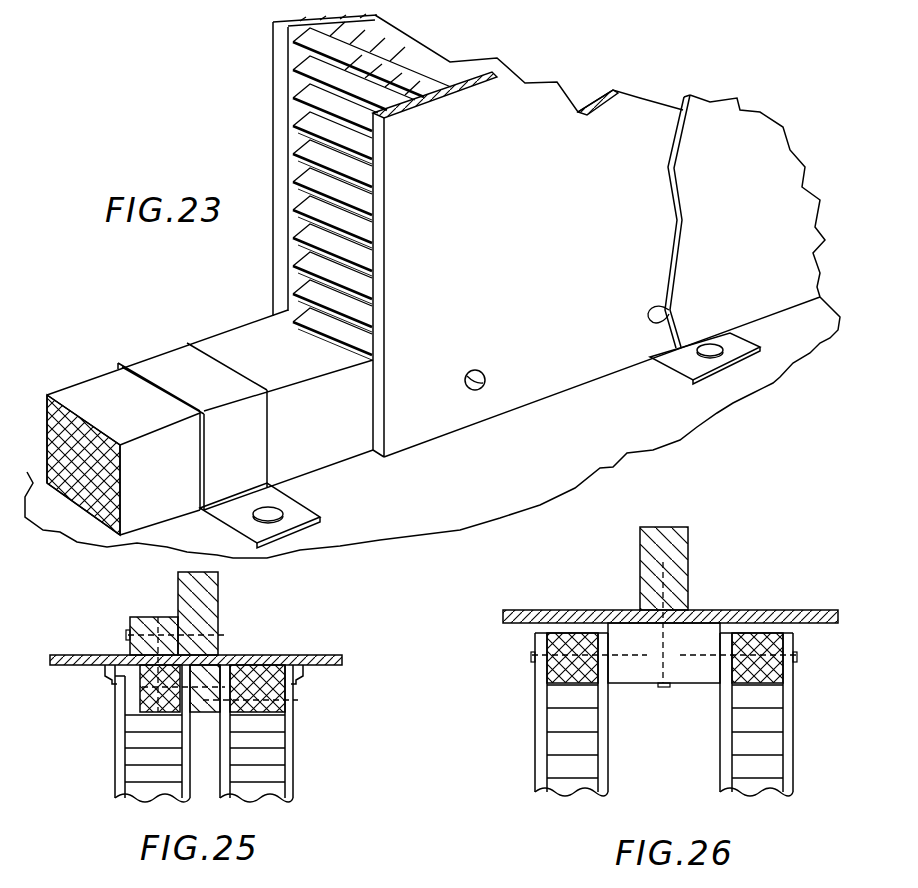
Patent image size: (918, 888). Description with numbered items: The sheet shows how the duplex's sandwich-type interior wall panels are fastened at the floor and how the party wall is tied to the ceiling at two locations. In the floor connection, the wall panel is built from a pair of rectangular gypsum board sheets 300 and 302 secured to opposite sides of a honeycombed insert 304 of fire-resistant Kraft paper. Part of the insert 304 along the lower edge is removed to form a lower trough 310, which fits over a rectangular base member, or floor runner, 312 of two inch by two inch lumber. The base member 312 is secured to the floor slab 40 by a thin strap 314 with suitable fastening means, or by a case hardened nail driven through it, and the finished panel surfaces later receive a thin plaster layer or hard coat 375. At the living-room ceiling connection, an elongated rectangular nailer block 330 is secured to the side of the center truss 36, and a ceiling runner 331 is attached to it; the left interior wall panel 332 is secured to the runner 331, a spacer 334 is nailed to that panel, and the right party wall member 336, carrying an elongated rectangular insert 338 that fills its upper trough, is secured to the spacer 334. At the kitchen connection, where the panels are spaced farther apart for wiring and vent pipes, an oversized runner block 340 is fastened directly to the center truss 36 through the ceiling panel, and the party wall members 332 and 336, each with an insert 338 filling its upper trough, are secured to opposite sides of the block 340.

In FIG. 23, the rectangular sheet of gypsum board 300 is at (628, 122).
In FIG. 23, the rectangular sheet of gypsum board 302 is at (277, 110).
In FIG. 23, the honeycombed insert 304 is at (397, 82).
In FIG. 23, the lower trough 310 is at (312, 326).
In FIG. 23, the base member (floor runner) 312 is at (78, 400).
In FIG. 23, the thin strap 314 is at (150, 363).
In FIG. 23, the plaster layer (hard coat) 375 is at (757, 138).
In FIG. 23, the floor slab 40 is at (505, 479).
In FIG. 25, the center truss 36 is at (207, 604).
In FIG. 26, the center truss 36 is at (677, 558).
In FIG. 25, the nailer block 330 is at (143, 618).
In FIG. 25, the ceiling runner 331 is at (143, 697).
In FIG. 25, the left interior wall panel (party wall member) 332 is at (115, 757).
In FIG. 26, the left interior wall panel (party wall member) 332 is at (535, 745).
In FIG. 25, the spacer 334 is at (212, 668).
In FIG. 25, the right party wall member 336 is at (292, 783).
In FIG. 26, the right party wall member 336 is at (790, 745).
In FIG. 25, the elongated rectangular insert 338 is at (265, 706).
In FIG. 26, the elongated rectangular insert 338 is at (548, 673).
In FIG. 26, the oversized runner block 340 is at (647, 667).